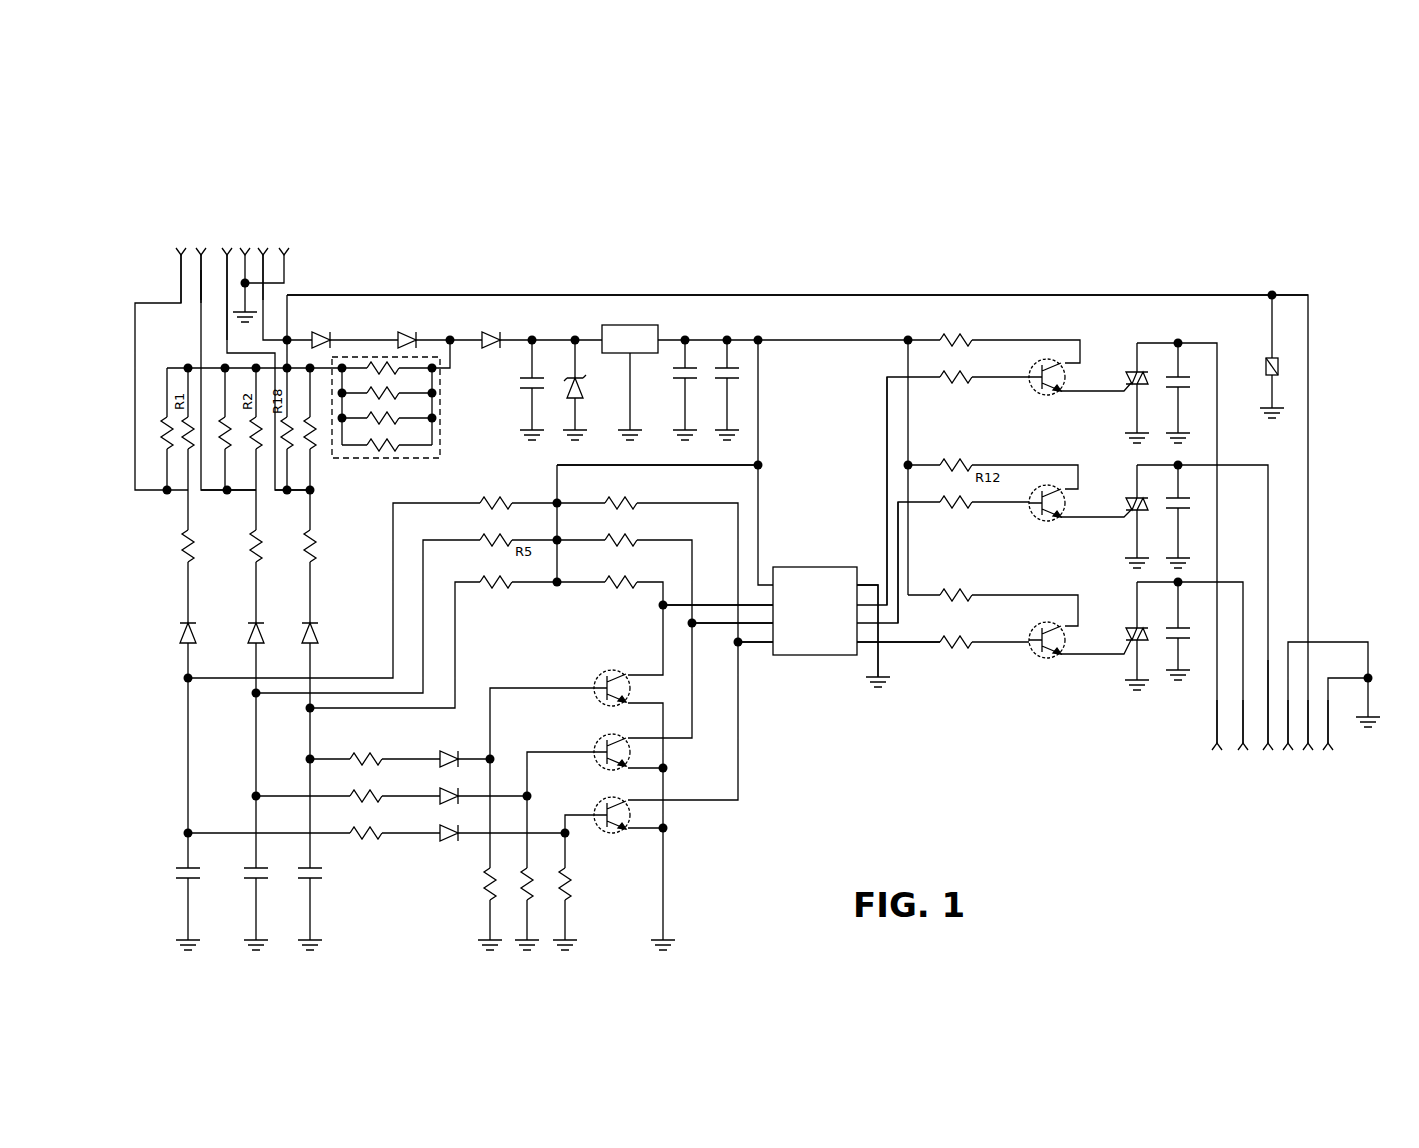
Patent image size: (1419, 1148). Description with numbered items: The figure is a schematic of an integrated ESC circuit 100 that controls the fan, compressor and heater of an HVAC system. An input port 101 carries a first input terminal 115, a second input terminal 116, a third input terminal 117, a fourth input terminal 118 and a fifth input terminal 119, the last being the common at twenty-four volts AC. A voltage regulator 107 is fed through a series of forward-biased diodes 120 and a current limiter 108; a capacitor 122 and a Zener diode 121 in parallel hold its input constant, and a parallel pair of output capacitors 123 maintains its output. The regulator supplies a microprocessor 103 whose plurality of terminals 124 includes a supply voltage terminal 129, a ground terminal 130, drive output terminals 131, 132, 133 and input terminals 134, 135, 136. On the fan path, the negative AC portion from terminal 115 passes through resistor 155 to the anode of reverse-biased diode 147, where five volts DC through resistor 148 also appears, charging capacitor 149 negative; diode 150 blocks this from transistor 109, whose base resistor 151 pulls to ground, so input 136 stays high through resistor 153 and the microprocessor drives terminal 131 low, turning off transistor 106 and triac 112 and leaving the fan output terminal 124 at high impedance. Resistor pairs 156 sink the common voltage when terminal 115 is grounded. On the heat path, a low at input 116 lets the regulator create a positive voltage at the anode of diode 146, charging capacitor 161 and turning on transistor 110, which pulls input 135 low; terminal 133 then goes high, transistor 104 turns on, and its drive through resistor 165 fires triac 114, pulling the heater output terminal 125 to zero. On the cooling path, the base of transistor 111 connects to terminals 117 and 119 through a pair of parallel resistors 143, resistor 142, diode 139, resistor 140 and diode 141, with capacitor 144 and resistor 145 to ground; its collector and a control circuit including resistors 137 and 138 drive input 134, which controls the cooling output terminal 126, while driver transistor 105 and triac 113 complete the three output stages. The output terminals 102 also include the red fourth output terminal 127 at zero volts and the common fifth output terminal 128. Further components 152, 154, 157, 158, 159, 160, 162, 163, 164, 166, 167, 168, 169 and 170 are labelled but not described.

The integrated ESC circuit 100 is at (940, 242).
The input port 101 is at (318, 222).
The output terminals 102 is at (1188, 777).
The microprocessor 103 is at (810, 670).
The transistor 104 is at (1025, 680).
The transistor 105 is at (1047, 530).
The transistor 106 is at (1038, 406).
The voltage regulator 107 is at (652, 305).
The current limiter 108 is at (452, 380).
The transistor 109 is at (628, 862).
The transistor 110 is at (568, 735).
The transistor 111 is at (568, 668).
The triac 112 is at (1114, 332).
The triac 113 is at (1178, 527).
The triac 114 is at (1157, 690).
The first input terminal 115 is at (181, 288).
The second input terminal 116 is at (201, 290).
The third input terminal 117 is at (207, 285).
The fourth input terminal 118 is at (227, 302).
The fifth input terminal 119 is at (263, 278).
The diodes 120 is at (330, 333).
The Zener diode 121 is at (580, 380).
The capacitor 122 is at (540, 340).
The output capacitors 123 is at (743, 370).
The first output terminal 124 is at (858, 540).
The second output terminal 125 is at (1242, 740).
The third output terminal 126 is at (1268, 700).
The fourth output terminal 127 is at (1288, 748).
The fifth output terminal 128 is at (1318, 745).
The supply voltage terminal 129 is at (762, 465).
The ground terminal 130 is at (873, 670).
The drive output terminal 131 is at (887, 448).
The drive output terminal 132 is at (896, 540).
The drive output terminal 133 is at (908, 648).
The input terminal 134 is at (720, 602).
The input terminal 135 is at (720, 627).
The input terminal 136 is at (758, 646).
The resistor 137 is at (605, 590).
The resistor 138 is at (492, 590).
The diode 139 is at (308, 621).
The resistor 140 is at (345, 755).
The diode 141 is at (443, 753).
The resistor 142 is at (310, 553).
The pair of parallel resistors 143 is at (313, 460).
The capacitor 144 is at (323, 878).
The resistor 145 is at (478, 910).
The diode 146 is at (254, 621).
The diode 147 is at (185, 621).
The resistor 148 is at (493, 497).
The capacitor 149 is at (254, 542).
The diode 150 is at (450, 845).
The resistor 151 is at (565, 900).
The resistor R26 152 is at (535, 910).
The resistor 153 is at (612, 500).
The resistor R8 154 is at (610, 542).
The resistor 155 is at (186, 542).
The resistor pairs 156 is at (168, 462).
The resistor R17 157 is at (227, 462).
The resistor R24 158 is at (355, 838).
The diode D8 159 is at (442, 830).
The resistor R23 160 is at (343, 790).
The capacitor 161 is at (248, 873).
The resistor R10 162 is at (952, 335).
The resistor R13 163 is at (948, 385).
The resistor R14 164 is at (950, 510).
The resistor 165 is at (970, 592).
The resistor R15 166 is at (967, 652).
The capacitor C7 167 is at (1197, 380).
The capacitor C8 168 is at (1197, 503).
The capacitor C9 169 is at (1197, 625).
The zener diode Z1 170 is at (1280, 368).